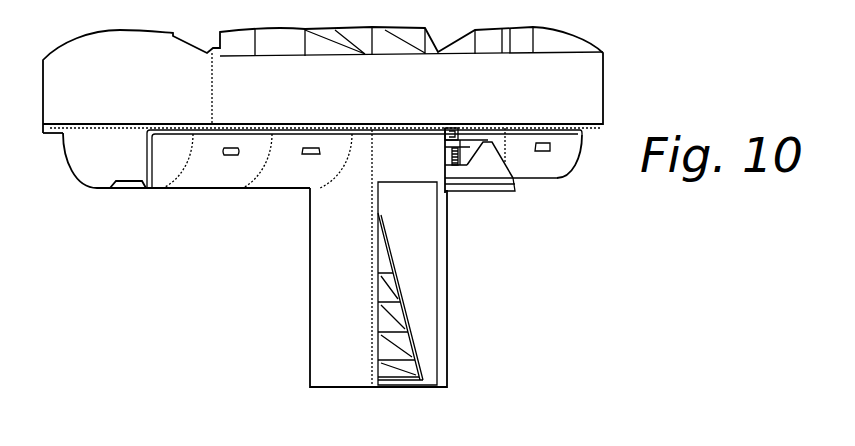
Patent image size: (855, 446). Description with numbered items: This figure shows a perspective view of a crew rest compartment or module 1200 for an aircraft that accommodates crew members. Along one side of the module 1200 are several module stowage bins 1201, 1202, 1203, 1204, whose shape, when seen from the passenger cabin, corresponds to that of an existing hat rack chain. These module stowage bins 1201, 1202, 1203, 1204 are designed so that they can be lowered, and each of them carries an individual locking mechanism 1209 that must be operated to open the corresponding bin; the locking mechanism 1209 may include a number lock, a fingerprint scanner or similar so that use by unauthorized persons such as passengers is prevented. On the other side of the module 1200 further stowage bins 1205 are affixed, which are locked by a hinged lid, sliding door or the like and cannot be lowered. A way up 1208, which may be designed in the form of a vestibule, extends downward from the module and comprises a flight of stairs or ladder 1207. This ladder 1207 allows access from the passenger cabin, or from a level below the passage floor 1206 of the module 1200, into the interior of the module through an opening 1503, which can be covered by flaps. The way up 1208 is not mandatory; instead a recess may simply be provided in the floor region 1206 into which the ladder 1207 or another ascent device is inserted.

The module 1200 is at (182, 290).
The module stowage bin 1201 is at (190, 178).
The module stowage bin 1202 is at (295, 176).
The module stowage bin 1203 is at (480, 193).
The module stowage bin 1204 is at (542, 170).
The stowage bins on the other side of the module 1205 is at (68, 157).
The passage floor 1206 is at (123, 189).
The flight of stairs or ladder 1207 is at (418, 378).
The way up 1208 is at (442, 310).
The locking mechanism 1209 is at (233, 158).
The opening 1503 is at (453, 127).